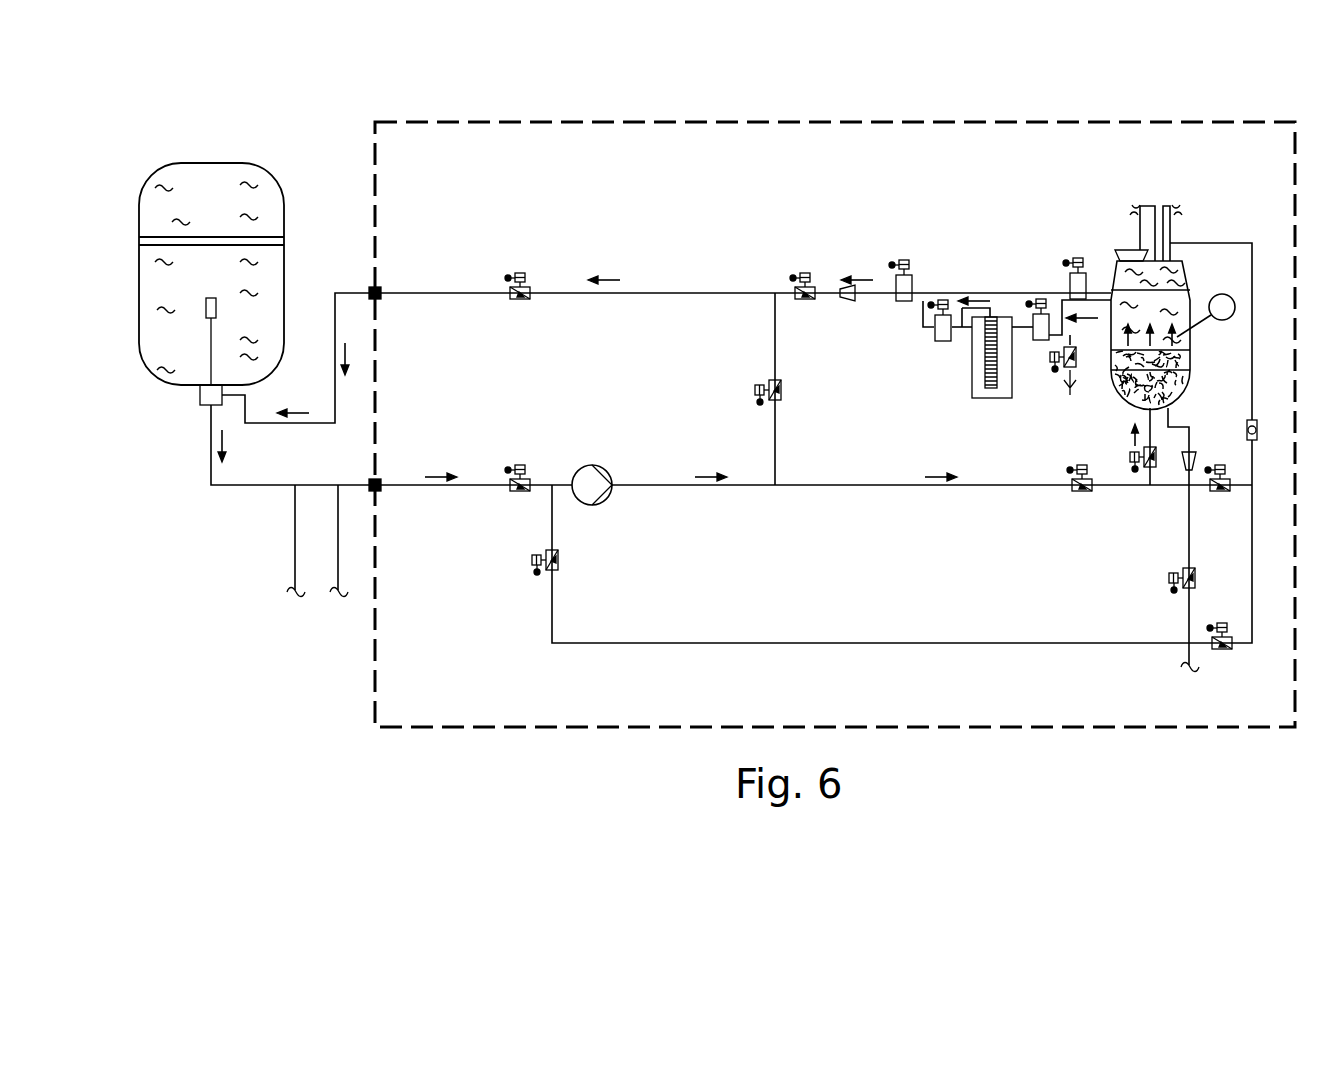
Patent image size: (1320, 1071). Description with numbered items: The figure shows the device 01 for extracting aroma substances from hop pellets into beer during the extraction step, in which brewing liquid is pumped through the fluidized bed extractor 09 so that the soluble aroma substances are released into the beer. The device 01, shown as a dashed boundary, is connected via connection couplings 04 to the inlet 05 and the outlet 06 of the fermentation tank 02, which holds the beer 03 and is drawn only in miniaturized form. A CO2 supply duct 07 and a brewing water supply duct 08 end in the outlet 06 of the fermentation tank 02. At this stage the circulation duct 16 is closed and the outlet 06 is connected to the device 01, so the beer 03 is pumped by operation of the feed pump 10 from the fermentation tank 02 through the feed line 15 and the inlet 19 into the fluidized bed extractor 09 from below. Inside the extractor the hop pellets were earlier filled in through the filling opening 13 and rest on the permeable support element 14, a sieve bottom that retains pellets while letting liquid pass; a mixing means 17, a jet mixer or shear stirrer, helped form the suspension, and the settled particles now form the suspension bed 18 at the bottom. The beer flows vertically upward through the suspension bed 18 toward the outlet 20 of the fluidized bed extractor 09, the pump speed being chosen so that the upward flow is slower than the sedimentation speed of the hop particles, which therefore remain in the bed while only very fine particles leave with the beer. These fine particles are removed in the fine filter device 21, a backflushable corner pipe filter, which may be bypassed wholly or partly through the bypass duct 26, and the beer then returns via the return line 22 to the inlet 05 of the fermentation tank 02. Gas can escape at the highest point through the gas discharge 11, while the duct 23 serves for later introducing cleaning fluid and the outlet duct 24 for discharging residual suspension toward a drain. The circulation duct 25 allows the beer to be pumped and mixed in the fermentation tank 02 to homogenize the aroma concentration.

The device 01 is at (1021, 114).
The fermentation tank 02 is at (284, 215).
The beer 03 is at (272, 251).
The connection couplings 04 is at (379, 289).
The inlet 05 is at (335, 404).
The outlet 06 is at (253, 485).
The CO2 supply duct 07 is at (295, 551).
The brewing water supply duct 08 is at (338, 559).
The fluidized bed extractor 09 is at (1190, 356).
The feed pump 10 is at (596, 465).
The gas discharge 11 is at (1140, 205).
The filling opening 13 is at (1120, 248).
The permeable support element 14 is at (1113, 379).
The feed line 15 is at (700, 488).
The circulation duct 16 is at (900, 645).
The mixing means 17 is at (1206, 321).
The suspension bed 18 is at (1183, 399).
The inlet 19 is at (1135, 420).
The outlet 20 is at (1103, 301).
The fine filter device 21 is at (972, 380).
The return line 22 is at (660, 292).
The duct 23 is at (1170, 205).
The outlet duct 24 is at (1189, 526).
The circulation duct 25 is at (775, 330).
The bypass duct 26 is at (990, 292).